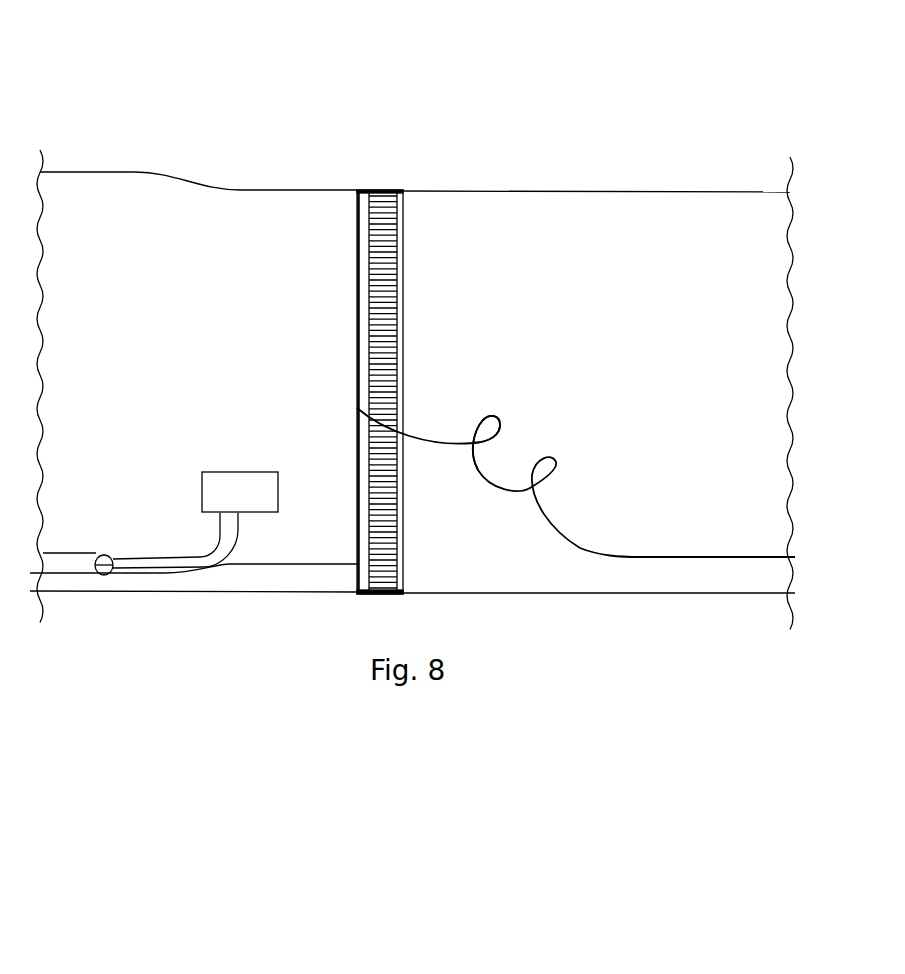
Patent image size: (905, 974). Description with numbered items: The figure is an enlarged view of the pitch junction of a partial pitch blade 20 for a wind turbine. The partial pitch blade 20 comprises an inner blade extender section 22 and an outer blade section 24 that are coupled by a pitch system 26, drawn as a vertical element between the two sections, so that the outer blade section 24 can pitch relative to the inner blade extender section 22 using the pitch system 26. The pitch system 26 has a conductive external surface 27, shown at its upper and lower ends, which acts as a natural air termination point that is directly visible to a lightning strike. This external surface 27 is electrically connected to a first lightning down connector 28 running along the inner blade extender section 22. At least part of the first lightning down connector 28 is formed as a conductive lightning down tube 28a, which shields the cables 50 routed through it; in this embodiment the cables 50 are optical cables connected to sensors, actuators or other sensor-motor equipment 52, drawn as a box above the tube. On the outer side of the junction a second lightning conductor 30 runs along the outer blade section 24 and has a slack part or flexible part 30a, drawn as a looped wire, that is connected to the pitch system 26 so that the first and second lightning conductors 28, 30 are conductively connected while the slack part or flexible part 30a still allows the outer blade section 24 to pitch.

The partial pitch blade 20 is at (543, 715).
The inner blade extender section 22 is at (210, 265).
The outer blade section 24 is at (603, 250).
The pitch system 26 is at (397, 158).
The external surface 27 is at (384, 190).
The first lightning down connector 28 is at (248, 563).
The lightning down tube 28a is at (58, 562).
The second lightning conductor 30 is at (697, 559).
The slack part or flexible part 30a is at (500, 423).
The cables 50 is at (187, 550).
The sensor-motor equipment 52 is at (250, 487).